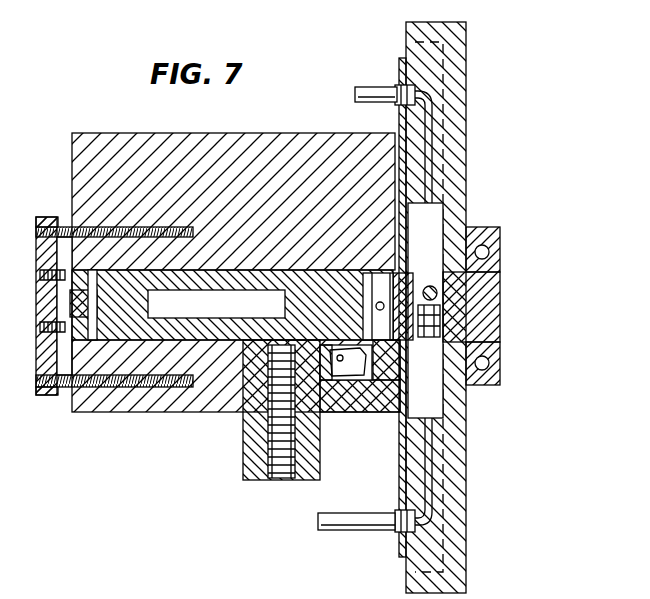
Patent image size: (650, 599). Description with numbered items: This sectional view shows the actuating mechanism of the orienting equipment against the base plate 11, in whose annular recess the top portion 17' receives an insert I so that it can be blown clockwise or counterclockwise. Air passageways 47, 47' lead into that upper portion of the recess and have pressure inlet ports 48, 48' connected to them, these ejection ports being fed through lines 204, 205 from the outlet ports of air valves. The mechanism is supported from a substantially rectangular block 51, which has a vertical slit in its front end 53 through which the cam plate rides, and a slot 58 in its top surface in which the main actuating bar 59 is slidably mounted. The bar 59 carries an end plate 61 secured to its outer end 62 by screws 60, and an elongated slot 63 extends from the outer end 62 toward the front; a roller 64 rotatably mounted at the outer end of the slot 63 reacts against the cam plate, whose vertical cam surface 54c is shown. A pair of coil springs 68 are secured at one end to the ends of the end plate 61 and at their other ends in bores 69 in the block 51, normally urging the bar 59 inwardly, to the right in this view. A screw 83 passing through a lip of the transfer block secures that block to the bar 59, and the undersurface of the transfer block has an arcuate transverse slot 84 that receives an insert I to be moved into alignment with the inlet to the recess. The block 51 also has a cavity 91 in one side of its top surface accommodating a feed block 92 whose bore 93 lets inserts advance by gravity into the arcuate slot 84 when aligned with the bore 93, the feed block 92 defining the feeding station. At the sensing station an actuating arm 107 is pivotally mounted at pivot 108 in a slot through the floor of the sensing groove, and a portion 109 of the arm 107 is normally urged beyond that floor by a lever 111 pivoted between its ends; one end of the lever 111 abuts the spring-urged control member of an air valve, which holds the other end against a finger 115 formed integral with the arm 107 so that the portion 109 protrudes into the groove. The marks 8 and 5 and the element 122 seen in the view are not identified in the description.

The base plate 11 is at (466, 537).
The top portion of annular recess 17' is at (460, 310).
The front end of block 53 is at (72, 172).
The end plate 61 is at (40, 246).
The roller 64 is at (110, 281).
The outer end of actuating bar 62 is at (70, 303).
The screws 60 is at (40, 327).
The vertical cam surface 54c is at (162, 300).
The pivot of actuating arm 108 is at (300, 312).
The elongated slot 63 is at (238, 282).
The slot in block top surface 58 is at (318, 294).
The main actuating bar 59 is at (316, 256).
The screw 83 is at (378, 302).
The portion of actuating arm 109 is at (352, 345).
The block 51 is at (182, 412).
The cavity 91 is at (222, 432).
The feed block 92 is at (246, 468).
The bore 93 is at (318, 462).
The actuating arm 107 is at (372, 355).
The valve seat 5 is at (332, 358).
The finger 115 is at (350, 421).
The lever 111 is at (380, 421).
The flow arrow 8 is at (365, 118).
The arcuate transverse slot 84 is at (450, 269).
The ball 122 is at (437, 296).
The insert I is at (440, 321).
The air passageway 47' is at (455, 147).
The pressure inlet port 48' is at (381, 83).
The line 205 is at (355, 94).
The air passageway 47 is at (456, 471).
The pressure inlet port 48 is at (388, 508).
The line 204 is at (350, 531).
The bores 69 is at (180, 227).
The coil springs 68 is at (58, 227).